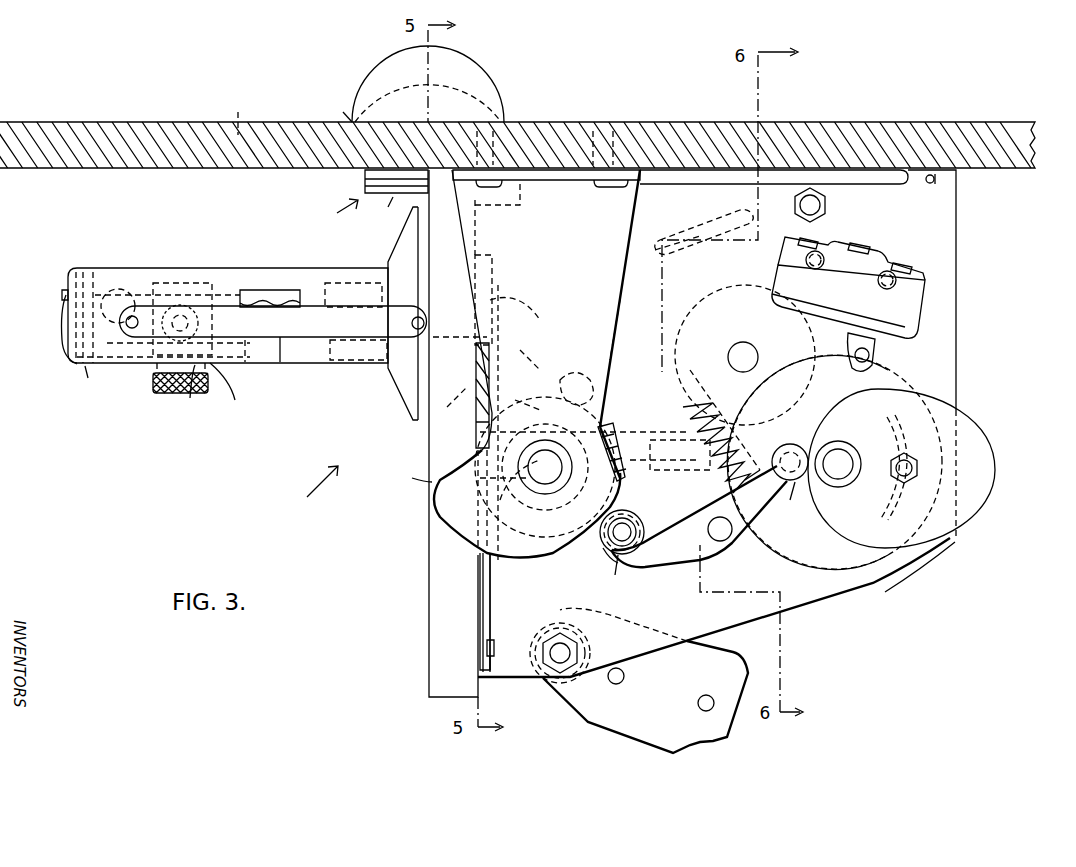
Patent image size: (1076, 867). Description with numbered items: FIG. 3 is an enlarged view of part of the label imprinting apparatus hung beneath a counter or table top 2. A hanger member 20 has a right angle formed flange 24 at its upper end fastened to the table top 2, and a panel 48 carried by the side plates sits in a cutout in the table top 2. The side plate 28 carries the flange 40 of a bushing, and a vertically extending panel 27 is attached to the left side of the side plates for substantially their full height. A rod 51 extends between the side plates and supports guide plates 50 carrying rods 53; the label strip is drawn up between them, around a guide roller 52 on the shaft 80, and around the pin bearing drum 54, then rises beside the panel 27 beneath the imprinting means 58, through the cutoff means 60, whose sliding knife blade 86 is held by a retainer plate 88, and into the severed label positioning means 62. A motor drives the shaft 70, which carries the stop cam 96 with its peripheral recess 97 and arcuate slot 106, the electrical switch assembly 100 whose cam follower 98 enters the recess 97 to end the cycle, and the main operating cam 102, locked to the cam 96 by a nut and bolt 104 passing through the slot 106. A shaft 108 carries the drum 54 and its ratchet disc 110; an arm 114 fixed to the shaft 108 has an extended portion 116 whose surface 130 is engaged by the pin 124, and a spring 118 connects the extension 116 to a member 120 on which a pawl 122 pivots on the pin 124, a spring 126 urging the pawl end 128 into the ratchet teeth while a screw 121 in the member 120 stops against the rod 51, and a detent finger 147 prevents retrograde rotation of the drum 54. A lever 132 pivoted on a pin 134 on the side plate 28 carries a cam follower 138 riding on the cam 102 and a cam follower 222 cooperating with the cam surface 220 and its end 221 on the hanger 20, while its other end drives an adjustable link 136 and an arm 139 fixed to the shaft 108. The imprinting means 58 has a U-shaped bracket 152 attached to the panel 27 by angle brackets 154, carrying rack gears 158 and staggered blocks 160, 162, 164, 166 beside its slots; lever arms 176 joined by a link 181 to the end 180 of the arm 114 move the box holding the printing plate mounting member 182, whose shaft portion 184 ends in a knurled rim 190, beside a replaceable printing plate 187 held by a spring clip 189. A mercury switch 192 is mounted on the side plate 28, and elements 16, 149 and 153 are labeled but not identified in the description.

The table top 2 is at (170, 122).
The slicing machine apparatus 16 is at (307, 492).
The hanger member 20 is at (625, 270).
The right angle formed flange 24 is at (543, 180).
The vertically extending panel 27 is at (430, 580).
The side plate 28 is at (958, 305).
The flange 40 is at (478, 452).
The panel 48 is at (235, 113).
The guide plates 50 is at (740, 672).
The rod 51 is at (556, 648).
The guide roller 52 is at (692, 305).
The rods 53 is at (698, 690).
The pin bearing drum 54 is at (527, 312).
The imprinting means 58 is at (222, 403).
The cutoff means 60 is at (334, 211).
The severed label positioning means 62 is at (490, 78).
The shaft 70 is at (840, 460).
The shaft 80 is at (745, 345).
The sliding knife blade 86 is at (365, 186).
The retainer plate 88 is at (335, 107).
The cam 96 is at (915, 372).
The recess 97 is at (850, 365).
The cam follower 98 is at (870, 358).
The electrical switch assembly 100 is at (912, 315).
The main operating cam 102 is at (990, 440).
The nut and bolt 104 is at (908, 460).
The arcuate slot 106 is at (905, 464).
The shaft 108 is at (535, 470).
The ratchet disc 110 is at (528, 507).
The arm 114 is at (539, 365).
The extended portion 116 is at (660, 555).
The spring 118 is at (752, 489).
The member 120 is at (778, 455).
The screw 121 is at (776, 433).
The pawl 122 is at (695, 417).
The pin 124 is at (681, 455).
The spring 126 is at (716, 436).
The end 128 is at (608, 562).
The surface 130 is at (635, 524).
The lever 132 is at (717, 568).
The pin 134 is at (730, 540).
The adjustable link 136 is at (606, 428).
The cam follower 138 is at (791, 501).
The arm 139 is at (581, 366).
The detent finger 147 is at (482, 597).
The bolt 149 is at (494, 670).
The U-shaped bracket 152 is at (62, 345).
The stud 153 is at (75, 382).
The angle brackets 154 is at (407, 383).
The rack gear 158 is at (270, 290).
The block 160 is at (172, 285).
The block 162 is at (180, 396).
The block 164 is at (352, 283).
The block 166 is at (365, 350).
The lever arms 176 is at (157, 342).
The end 180 is at (472, 310).
The link 181 is at (282, 362).
The printing plate mounting member 182 is at (250, 362).
The shaft portion 184 is at (236, 404).
The replaceable printing plate 187 is at (60, 300).
The spring clip 189 is at (115, 287).
The knurled rim 190 is at (190, 398).
The mercury switch 192 is at (690, 238).
The cam surface 220 is at (480, 545).
The end 221 is at (406, 471).
The cam follower 222 is at (617, 575).